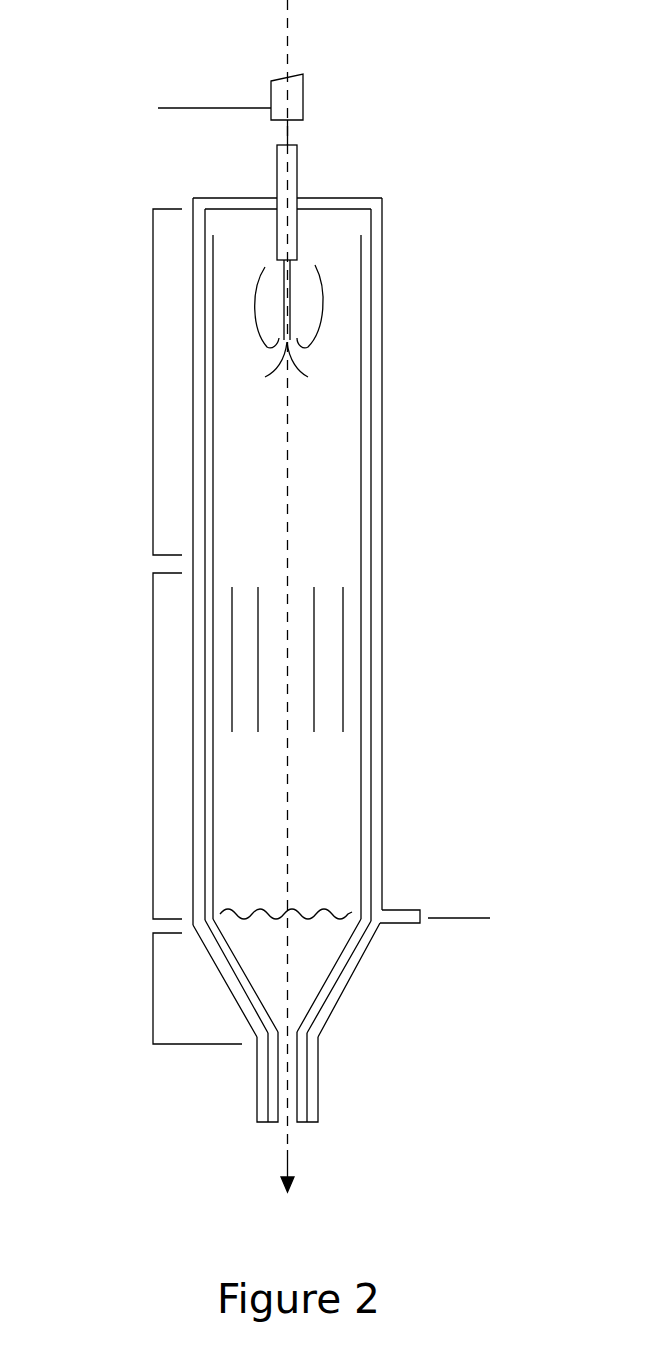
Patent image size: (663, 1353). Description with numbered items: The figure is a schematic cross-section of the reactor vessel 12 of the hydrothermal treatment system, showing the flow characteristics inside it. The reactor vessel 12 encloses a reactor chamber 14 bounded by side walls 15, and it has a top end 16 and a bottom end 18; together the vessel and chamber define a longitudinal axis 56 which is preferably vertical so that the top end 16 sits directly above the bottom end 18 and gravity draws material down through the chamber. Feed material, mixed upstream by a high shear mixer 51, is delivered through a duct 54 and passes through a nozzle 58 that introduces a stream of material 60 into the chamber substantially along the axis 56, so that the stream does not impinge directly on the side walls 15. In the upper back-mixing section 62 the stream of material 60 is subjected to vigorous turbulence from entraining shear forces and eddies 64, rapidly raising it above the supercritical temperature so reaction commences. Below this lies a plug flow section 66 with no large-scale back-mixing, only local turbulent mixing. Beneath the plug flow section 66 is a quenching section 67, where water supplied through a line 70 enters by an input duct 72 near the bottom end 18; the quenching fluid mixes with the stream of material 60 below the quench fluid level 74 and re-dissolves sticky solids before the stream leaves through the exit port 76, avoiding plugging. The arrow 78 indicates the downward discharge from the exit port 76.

The reactor vessel 12 is at (383, 430).
The reactor chamber 14 is at (240, 502).
The side walls 15 is at (372, 550).
The top end 16 is at (346, 198).
The bottom end 18 is at (357, 972).
The high shear mixer 51 is at (304, 92).
The duct 54 is at (222, 106).
The longitudinal axis 56 is at (289, 50).
The nozzle 58 is at (298, 156).
The stream of material 60 is at (291, 288).
The back-mixing section 62 is at (153, 333).
The eddies 64 is at (308, 298).
The plug flow section 66 is at (153, 630).
The quenching section 67 is at (153, 972).
The line 70 is at (447, 917).
The input duct 72 is at (397, 928).
The quench fluid level 74 is at (302, 910).
The exit port 76 is at (297, 1122).
The discharge flow direction 78 is at (284, 1160).